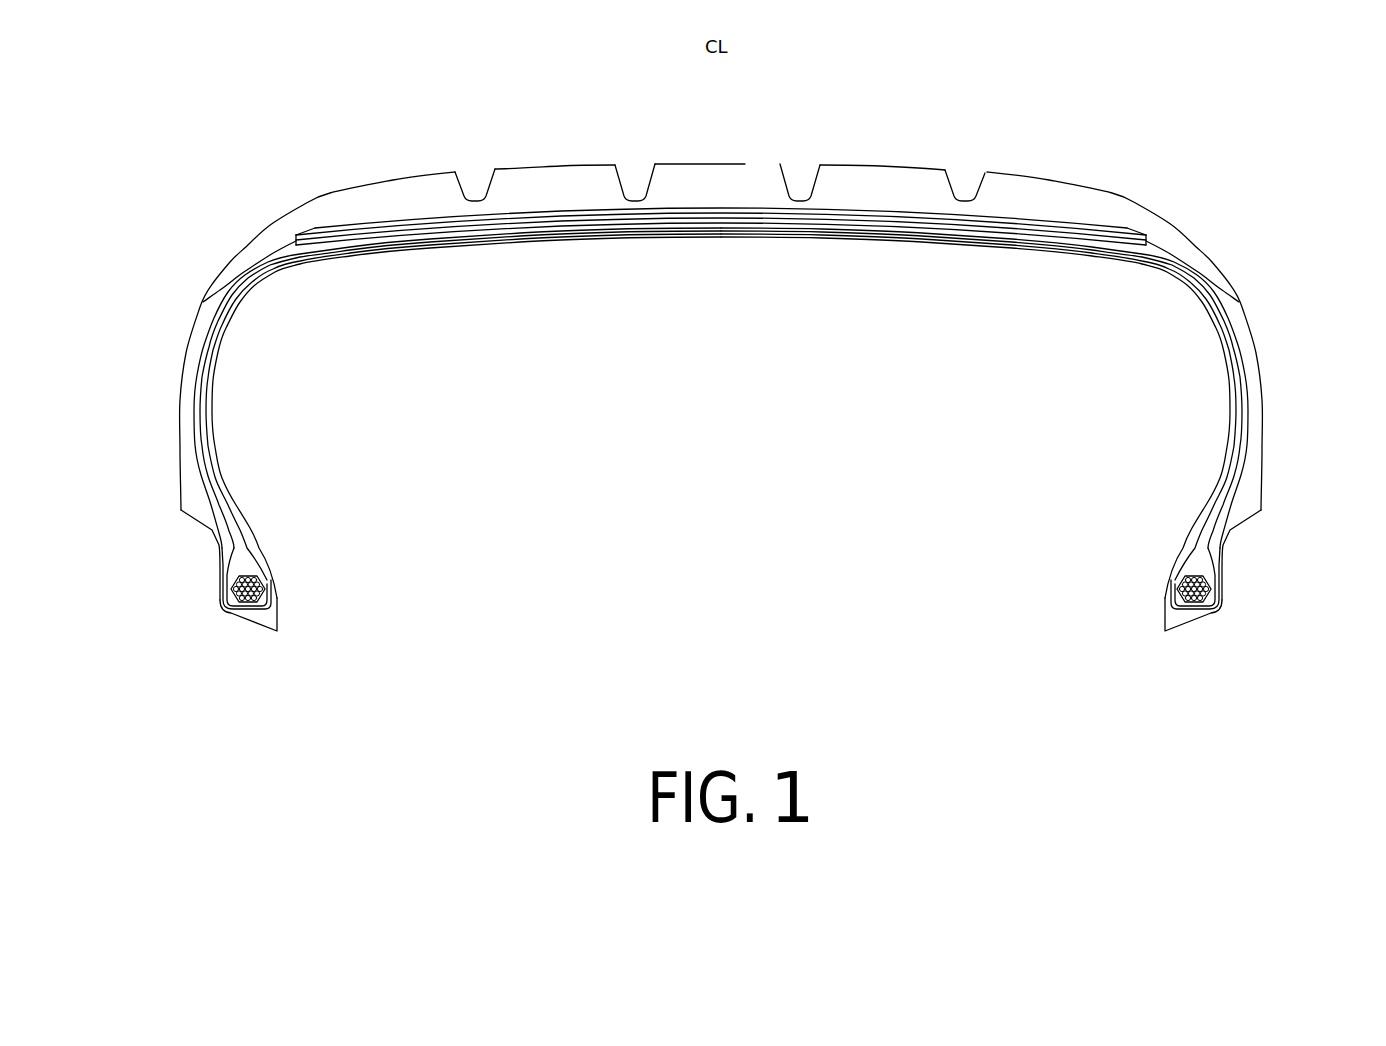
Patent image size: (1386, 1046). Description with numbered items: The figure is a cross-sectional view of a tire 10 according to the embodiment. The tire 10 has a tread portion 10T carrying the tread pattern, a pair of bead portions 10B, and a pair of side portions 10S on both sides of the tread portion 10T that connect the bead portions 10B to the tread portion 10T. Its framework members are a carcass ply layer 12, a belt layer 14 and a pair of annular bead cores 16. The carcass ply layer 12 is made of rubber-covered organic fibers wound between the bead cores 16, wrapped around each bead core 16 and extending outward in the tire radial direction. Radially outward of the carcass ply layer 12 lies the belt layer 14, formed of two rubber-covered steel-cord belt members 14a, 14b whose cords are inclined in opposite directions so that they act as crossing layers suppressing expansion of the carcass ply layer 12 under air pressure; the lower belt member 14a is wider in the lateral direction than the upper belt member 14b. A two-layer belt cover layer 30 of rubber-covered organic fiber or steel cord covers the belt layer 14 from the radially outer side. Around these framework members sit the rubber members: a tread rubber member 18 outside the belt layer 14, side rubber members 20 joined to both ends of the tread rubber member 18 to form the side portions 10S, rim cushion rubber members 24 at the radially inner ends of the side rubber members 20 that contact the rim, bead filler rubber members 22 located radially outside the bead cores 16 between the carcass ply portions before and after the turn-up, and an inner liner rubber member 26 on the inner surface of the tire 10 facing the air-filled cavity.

The tire 10 is at (728, 380).
The tread portion 10T is at (834, 144).
The side portion 10S is at (171, 379).
The bead portion 10B is at (294, 613).
The carcass ply layer 12 is at (253, 289).
The belt layer 14 is at (721, 293).
The lower layer belt member 14a is at (561, 222).
The upper layer belt member 14b is at (577, 216).
The bead core 16 is at (234, 604).
The tread rubber member 18 is at (1110, 212).
The side rubber member 20 is at (203, 313).
The bead filler rubber member 22 is at (232, 535).
The rim cushion rubber member 24 is at (210, 547).
The inner liner rubber member 26 is at (467, 238).
The belt cover layer 30 is at (430, 218).